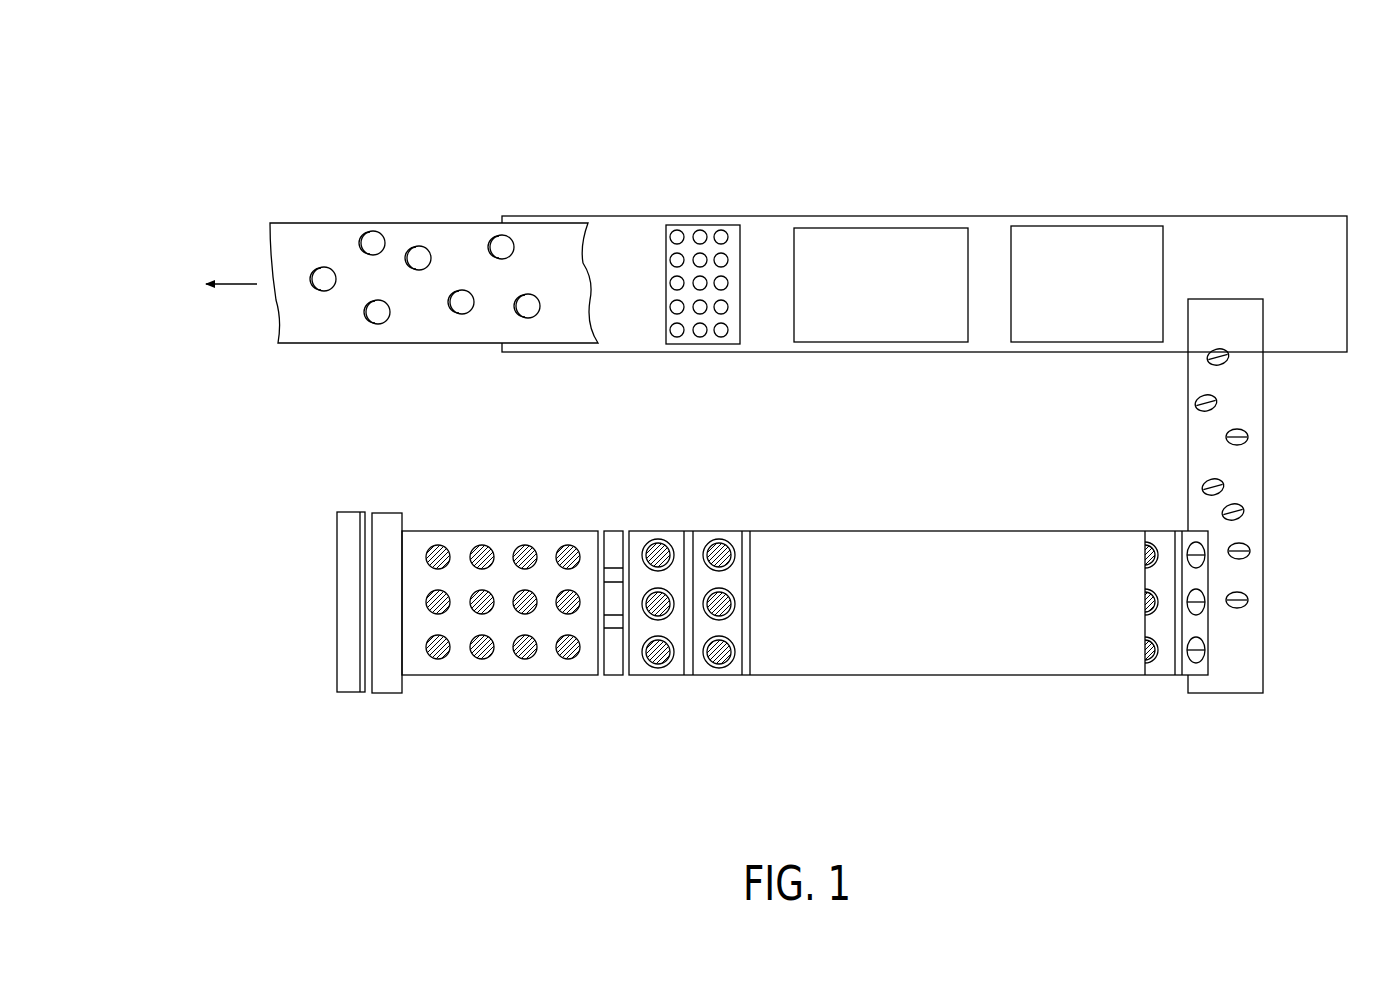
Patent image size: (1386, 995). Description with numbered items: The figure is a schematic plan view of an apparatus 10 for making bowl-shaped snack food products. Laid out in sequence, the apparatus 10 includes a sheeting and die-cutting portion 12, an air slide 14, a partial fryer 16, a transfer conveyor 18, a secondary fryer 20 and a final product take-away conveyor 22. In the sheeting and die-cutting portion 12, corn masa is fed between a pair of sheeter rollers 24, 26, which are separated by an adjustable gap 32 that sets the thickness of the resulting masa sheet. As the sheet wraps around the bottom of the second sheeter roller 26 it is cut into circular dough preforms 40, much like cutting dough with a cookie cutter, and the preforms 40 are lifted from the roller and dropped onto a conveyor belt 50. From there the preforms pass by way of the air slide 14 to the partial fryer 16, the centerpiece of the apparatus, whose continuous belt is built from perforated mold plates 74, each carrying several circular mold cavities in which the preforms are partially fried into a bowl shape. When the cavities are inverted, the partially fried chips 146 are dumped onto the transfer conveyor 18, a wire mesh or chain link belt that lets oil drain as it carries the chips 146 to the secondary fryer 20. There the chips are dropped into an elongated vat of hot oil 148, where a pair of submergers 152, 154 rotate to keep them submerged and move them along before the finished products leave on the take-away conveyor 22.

The apparatus 10 is at (879, 115).
The sheeting and die-cutting portion 12 is at (330, 729).
The air slide 14 is at (617, 522).
The partial fryer 16 is at (630, 729).
The transfer conveyor 18 is at (1288, 465).
The secondary fryer 20 is at (1340, 207).
The final product take-away conveyor 22 is at (366, 210).
The sheeter roller 24 is at (352, 533).
The sheeter roller 26 is at (384, 530).
The gap 32 is at (367, 688).
The circular dough preforms 40 is at (520, 546).
The conveyor belt 50 is at (546, 548).
The perforated mold plate 74 is at (672, 540).
The partially fried chips 146 is at (1216, 400).
The hot oil 148 is at (1262, 272).
The submerger 152 is at (1113, 303).
The submerger 154 is at (918, 310).